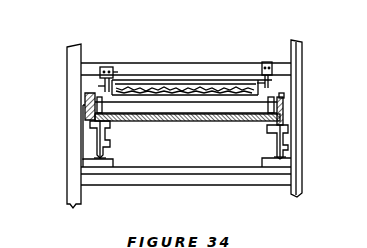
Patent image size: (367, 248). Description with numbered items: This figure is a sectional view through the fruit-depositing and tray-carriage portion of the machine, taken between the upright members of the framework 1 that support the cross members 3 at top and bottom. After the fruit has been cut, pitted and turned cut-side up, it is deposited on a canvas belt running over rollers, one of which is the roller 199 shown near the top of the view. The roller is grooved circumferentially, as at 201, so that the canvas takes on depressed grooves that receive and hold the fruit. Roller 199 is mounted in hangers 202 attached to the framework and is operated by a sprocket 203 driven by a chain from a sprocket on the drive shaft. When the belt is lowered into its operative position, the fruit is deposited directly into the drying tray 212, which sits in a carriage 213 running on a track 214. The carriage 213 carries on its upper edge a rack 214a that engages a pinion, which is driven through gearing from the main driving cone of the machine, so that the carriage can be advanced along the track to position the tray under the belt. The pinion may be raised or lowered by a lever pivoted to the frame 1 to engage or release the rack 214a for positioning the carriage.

The framework 1 is at (73, 147).
The frame cross rail 3 is at (199, 65).
The roller 199 is at (207, 88).
The circumferential groove 201 is at (163, 83).
The hangers 202 is at (115, 73).
The sprocket 203 is at (100, 73).
The drying tray 212 is at (283, 100).
The carriage 213 is at (277, 117).
The track 214 is at (280, 153).
The rack 214a is at (90, 97).